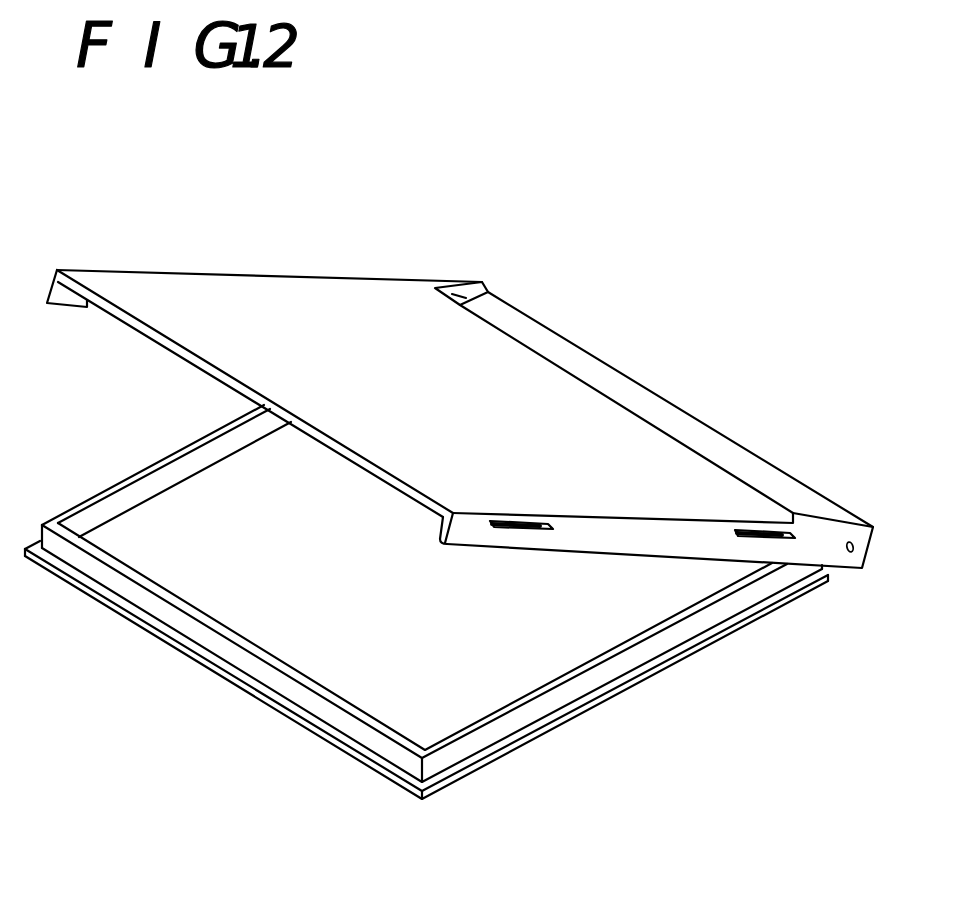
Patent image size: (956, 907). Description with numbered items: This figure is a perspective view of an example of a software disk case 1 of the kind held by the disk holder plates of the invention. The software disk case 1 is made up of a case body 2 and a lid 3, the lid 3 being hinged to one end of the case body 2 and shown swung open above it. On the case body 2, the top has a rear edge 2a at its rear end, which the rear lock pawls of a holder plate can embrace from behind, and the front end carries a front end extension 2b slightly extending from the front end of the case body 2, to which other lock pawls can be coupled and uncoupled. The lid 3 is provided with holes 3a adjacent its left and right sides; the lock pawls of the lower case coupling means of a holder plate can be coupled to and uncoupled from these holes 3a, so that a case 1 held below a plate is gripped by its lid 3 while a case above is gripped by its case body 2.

The software disk case 1 is at (460, 465).
The case body 2 is at (426, 605).
The rear edge 2a is at (663, 408).
The front end extension 2b is at (214, 667).
The lid 3 is at (460, 470).
The holes 3a is at (526, 525).